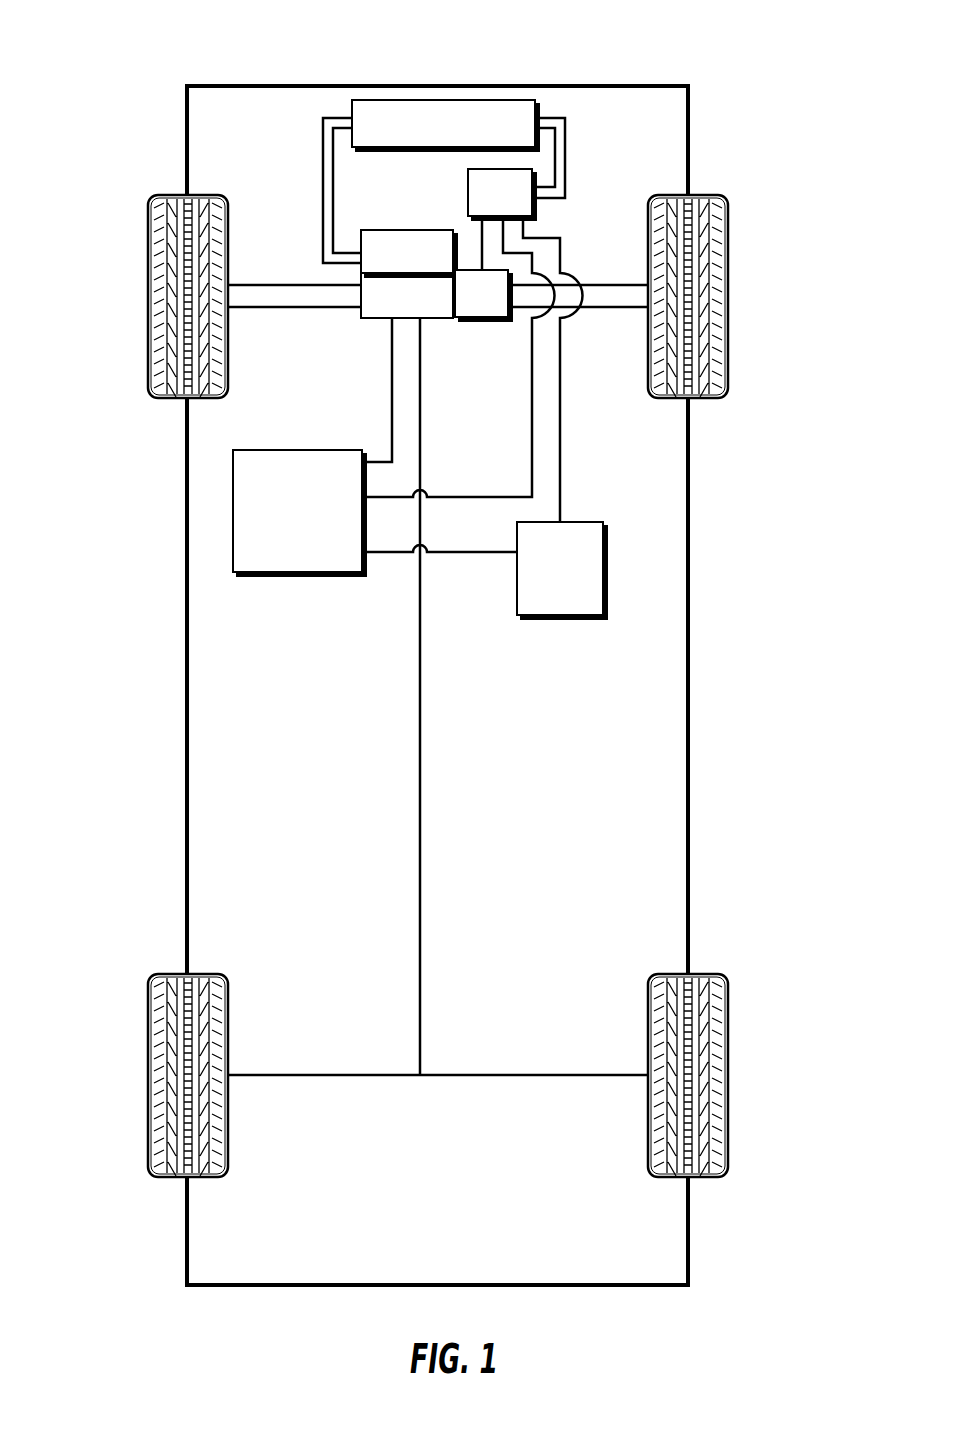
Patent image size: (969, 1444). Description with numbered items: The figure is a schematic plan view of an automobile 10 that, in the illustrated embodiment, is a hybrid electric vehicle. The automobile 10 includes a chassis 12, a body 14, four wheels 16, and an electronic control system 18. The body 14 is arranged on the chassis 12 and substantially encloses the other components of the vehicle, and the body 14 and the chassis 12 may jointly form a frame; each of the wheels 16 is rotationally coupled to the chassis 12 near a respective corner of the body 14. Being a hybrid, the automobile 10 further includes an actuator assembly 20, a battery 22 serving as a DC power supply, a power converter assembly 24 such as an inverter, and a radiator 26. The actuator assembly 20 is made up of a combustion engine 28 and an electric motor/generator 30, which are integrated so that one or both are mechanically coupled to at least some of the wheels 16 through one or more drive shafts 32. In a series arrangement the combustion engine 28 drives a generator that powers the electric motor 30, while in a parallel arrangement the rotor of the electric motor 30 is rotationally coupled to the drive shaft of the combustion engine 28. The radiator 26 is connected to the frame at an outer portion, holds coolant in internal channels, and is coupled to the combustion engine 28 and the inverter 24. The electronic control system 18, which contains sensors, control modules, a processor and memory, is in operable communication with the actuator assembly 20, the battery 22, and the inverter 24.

The automobile 10 is at (737, 58).
The chassis 12 is at (422, 862).
The body 14 is at (186, 513).
The wheels 16 is at (157, 274).
The electronic control system 18 is at (313, 530).
The actuator assembly 20 is at (455, 333).
The battery 22 is at (576, 588).
The power converter assembly 24 is at (516, 210).
The radiator 26 is at (459, 142).
The combustion engine 28 is at (423, 269).
The electric motor/generator 30 is at (498, 312).
The drive shafts 32 is at (252, 295).